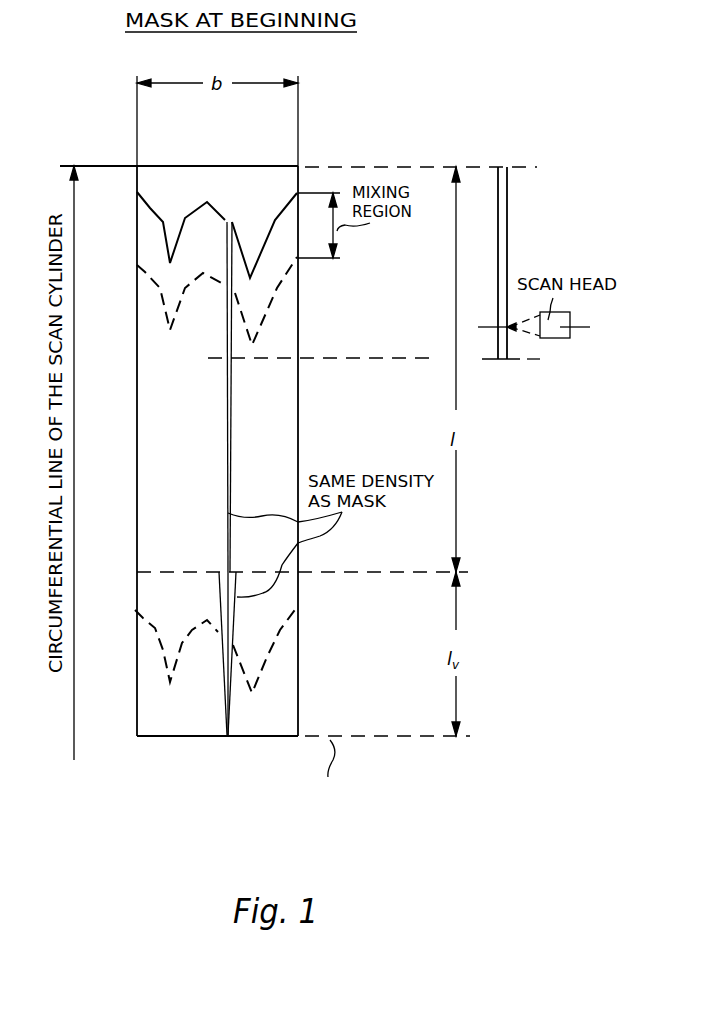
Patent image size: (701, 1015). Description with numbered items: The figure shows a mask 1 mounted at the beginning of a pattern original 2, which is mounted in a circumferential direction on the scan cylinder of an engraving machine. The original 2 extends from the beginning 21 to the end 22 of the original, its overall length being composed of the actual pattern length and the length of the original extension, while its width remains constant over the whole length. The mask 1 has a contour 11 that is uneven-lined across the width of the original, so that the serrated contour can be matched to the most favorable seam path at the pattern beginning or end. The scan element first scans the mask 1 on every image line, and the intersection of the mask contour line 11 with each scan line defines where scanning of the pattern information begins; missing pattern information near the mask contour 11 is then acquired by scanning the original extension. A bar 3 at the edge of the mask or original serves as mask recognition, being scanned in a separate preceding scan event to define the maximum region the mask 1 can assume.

The mask 1 is at (188, 165).
The pattern original 2 is at (157, 427).
The bar 3 is at (508, 226).
The mask contour 11 is at (157, 293).
The beginning of the original 21 is at (350, 165).
The end of the original 22 is at (162, 738).